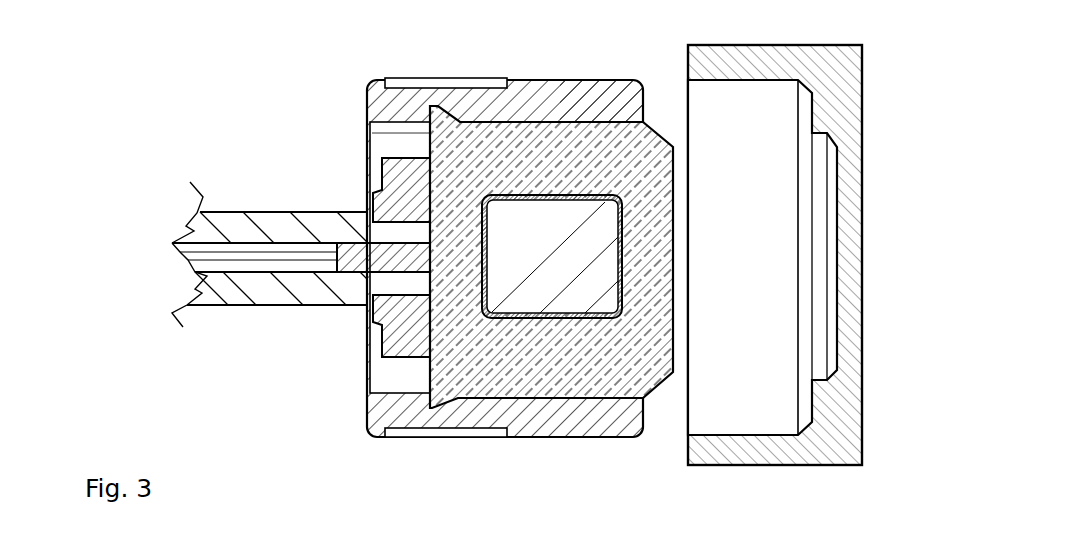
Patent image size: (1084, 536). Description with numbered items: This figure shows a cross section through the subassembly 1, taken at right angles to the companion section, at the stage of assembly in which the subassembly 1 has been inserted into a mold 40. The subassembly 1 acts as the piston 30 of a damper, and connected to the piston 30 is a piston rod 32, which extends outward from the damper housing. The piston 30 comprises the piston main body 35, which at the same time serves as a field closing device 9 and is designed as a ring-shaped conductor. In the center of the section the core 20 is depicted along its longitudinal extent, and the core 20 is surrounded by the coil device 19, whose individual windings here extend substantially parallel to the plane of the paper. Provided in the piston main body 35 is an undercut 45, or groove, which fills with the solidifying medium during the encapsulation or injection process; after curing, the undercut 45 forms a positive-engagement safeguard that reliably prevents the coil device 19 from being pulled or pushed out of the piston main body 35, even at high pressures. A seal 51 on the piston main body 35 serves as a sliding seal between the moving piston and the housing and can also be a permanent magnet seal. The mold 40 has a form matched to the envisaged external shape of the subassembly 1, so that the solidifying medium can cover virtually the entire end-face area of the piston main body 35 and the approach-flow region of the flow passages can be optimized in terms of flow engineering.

The subassembly 1 is at (272, 128).
The field closing device 9 is at (533, 82).
The coil device 19 is at (542, 372).
The core 20 is at (551, 244).
The piston 30 is at (368, 86).
The piston rod 32 is at (275, 222).
The piston main body 35 is at (580, 92).
The mold 40 is at (852, 117).
The undercut 45 is at (430, 133).
The seal 51 is at (432, 437).